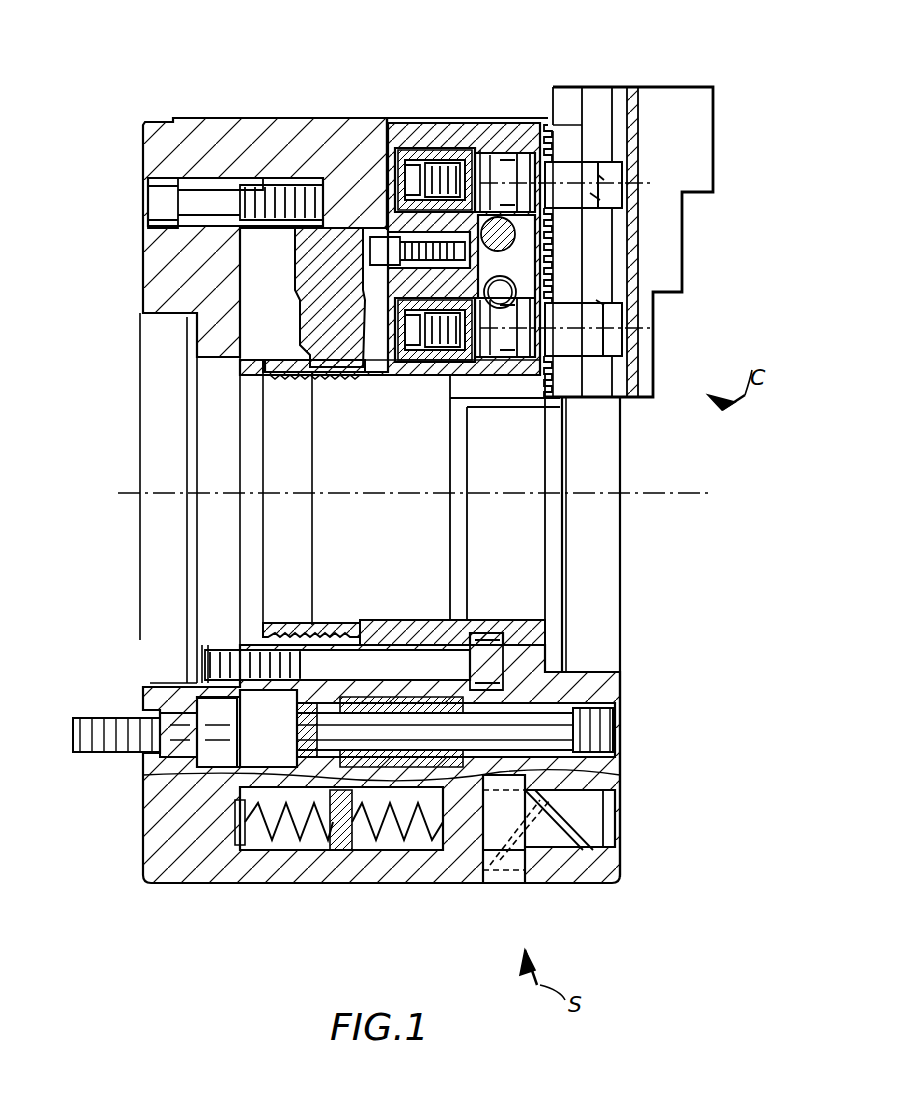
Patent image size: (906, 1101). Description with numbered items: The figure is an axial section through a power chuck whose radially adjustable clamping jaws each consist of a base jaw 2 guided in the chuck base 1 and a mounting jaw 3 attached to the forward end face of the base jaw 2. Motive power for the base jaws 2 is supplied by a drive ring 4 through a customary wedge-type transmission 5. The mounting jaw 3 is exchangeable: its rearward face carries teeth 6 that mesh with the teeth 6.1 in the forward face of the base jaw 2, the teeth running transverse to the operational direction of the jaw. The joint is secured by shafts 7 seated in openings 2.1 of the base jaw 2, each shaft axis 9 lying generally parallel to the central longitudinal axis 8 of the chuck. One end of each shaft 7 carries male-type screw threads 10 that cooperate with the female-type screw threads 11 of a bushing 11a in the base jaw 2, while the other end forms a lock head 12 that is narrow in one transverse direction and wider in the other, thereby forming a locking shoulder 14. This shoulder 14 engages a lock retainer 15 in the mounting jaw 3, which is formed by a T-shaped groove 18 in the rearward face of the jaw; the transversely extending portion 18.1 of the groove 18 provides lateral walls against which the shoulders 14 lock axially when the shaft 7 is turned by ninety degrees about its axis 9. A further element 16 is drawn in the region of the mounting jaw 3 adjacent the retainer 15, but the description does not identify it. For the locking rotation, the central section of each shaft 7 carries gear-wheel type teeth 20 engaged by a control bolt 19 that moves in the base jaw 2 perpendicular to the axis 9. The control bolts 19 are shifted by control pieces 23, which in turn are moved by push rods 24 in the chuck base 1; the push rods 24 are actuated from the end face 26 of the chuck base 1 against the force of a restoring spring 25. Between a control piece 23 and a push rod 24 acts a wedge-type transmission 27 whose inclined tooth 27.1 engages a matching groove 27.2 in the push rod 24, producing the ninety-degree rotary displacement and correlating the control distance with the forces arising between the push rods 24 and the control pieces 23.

The chuck base 1 is at (273, 128).
The base jaw 2 is at (405, 125).
The opening 2.1 is at (490, 150).
The mounting jaw 3 is at (700, 90).
The drive ring 4 is at (340, 378).
The wedge-type transmission 5 is at (330, 292).
The teeth of mounting jaw 6 is at (553, 128).
The teeth of base jaw 6.1 is at (548, 262).
The shaft 7 is at (563, 168).
The central longitudinal axis of the power chuck 8 is at (505, 500).
The central longitudinal axis of the shaft 9 is at (600, 178).
The male-type screw threads 10 is at (472, 150).
The female-type screw threads 11 is at (440, 150).
The bushing 11a is at (455, 150).
The lock head 12 is at (590, 197).
The locking shoulder 14 is at (618, 200).
The lock retainer 15 is at (600, 112).
The clamping plate 16 is at (585, 146).
The T-shaped groove 18 is at (575, 100).
The transversely extending portion of the T-shaped groove 18.1 is at (600, 297).
The control bolt 19 is at (503, 292).
The gear-wheel type teeth 20 is at (518, 150).
The control piece 23 is at (600, 765).
The push rod 24 is at (582, 845).
The restoring spring 25 is at (398, 852).
The end face 26 is at (628, 695).
The transmission 27 is at (520, 872).
The tooth 27.1 is at (470, 885).
The groove 27.2 is at (620, 820).